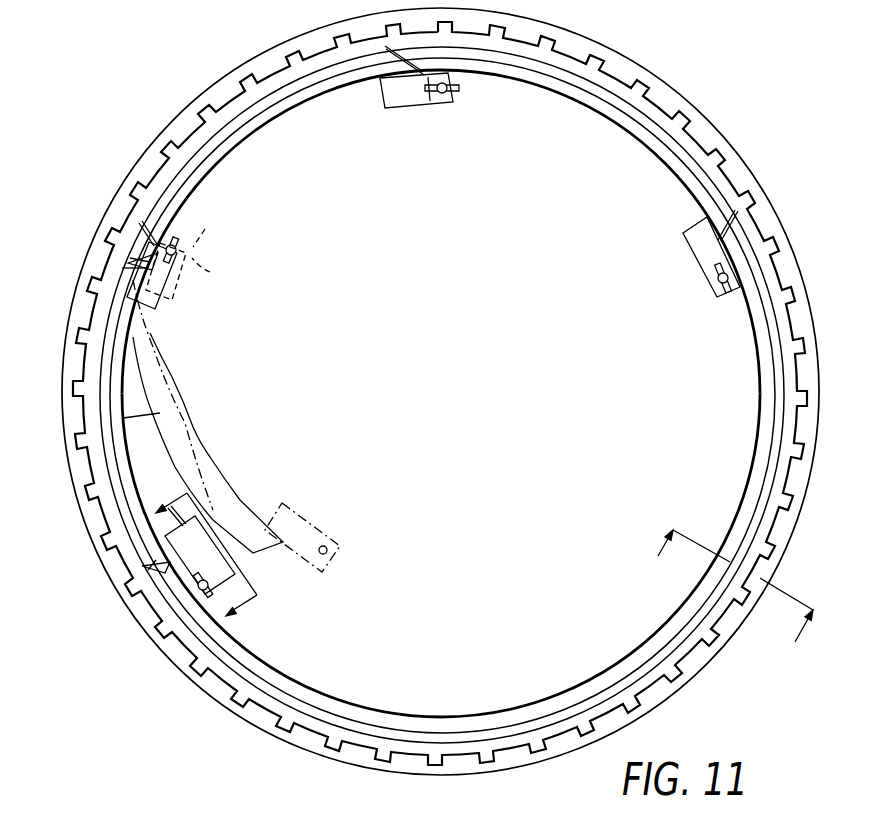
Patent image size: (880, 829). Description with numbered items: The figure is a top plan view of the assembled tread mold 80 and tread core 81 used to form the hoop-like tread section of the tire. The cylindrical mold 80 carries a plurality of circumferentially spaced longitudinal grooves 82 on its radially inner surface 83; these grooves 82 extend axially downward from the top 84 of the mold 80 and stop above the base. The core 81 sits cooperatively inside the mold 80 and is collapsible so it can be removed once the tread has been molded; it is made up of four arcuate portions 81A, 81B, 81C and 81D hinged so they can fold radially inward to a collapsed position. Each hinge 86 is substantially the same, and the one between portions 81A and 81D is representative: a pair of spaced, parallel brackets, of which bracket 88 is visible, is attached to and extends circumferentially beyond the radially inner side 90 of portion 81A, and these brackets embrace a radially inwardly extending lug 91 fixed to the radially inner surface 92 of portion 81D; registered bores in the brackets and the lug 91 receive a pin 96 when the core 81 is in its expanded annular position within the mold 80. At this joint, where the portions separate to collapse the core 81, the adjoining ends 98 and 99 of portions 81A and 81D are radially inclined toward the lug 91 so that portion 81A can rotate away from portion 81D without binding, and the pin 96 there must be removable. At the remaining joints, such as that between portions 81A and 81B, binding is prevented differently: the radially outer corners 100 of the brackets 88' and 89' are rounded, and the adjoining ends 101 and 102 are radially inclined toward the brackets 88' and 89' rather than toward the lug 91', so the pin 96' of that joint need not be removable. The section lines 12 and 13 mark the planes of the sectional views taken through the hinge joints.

The tread mold 80 is at (706, 108).
The tread core 81 is at (742, 356).
The arcuate portion 81A is at (123, 463).
The arcuate portion 81B is at (238, 138).
The arcuate portion 81C is at (655, 145).
The arcuate portion 81D is at (765, 440).
The longitudinal grooves 82 is at (483, 758).
The radially inner surface 83 is at (268, 713).
The top 84 is at (625, 68).
The hinge 86 is at (434, 117).
The bracket 88 is at (236, 452).
The bracket 88' is at (193, 279).
The bracket 89' is at (222, 225).
The radially inner side 90 is at (160, 413).
The lug 91 is at (227, 550).
The lug 91' is at (230, 270).
The radially inner surface 92 is at (337, 698).
The pin 96 is at (181, 638).
The pin 96' is at (173, 395).
The adjoining end 98 is at (142, 567).
The adjoining end 99 is at (148, 570).
The radially outer corners 100 is at (165, 248).
The adjoining end 101 is at (122, 268).
The adjoining end 102 is at (150, 262).
The section line 12- 12 is at (205, 559).
The section line 13- 13 is at (745, 572).